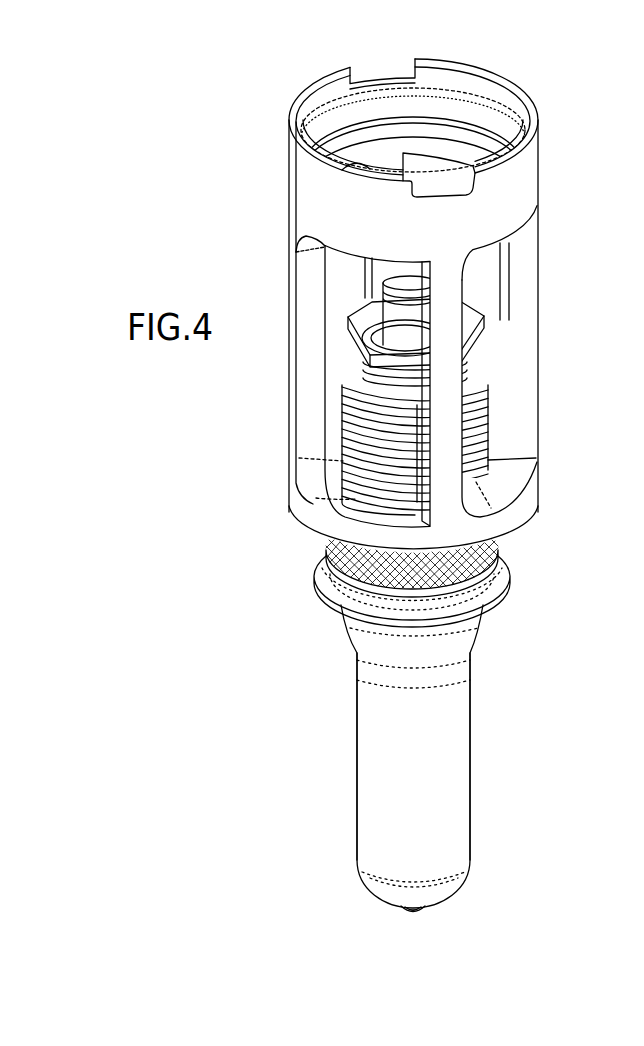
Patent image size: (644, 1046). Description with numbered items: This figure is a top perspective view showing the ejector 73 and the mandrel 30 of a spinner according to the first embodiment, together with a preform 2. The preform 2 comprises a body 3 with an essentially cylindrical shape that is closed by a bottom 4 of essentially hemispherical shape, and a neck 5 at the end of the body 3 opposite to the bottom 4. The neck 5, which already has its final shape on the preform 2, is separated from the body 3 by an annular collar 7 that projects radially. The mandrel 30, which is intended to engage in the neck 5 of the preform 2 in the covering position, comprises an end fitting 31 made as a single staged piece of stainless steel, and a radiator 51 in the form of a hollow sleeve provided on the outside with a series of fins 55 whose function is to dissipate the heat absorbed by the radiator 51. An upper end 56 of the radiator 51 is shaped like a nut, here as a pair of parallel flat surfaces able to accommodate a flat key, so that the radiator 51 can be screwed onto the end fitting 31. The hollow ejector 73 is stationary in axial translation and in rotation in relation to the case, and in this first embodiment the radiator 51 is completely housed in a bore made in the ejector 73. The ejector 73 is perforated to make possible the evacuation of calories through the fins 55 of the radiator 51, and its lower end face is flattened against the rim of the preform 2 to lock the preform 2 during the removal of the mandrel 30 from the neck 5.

The preform 2 is at (470, 735).
The body 3 is at (466, 790).
The bottom 4 is at (442, 892).
The neck 5 is at (493, 559).
The annular collar 7 is at (496, 594).
The mandrel 30 is at (488, 412).
The end fitting 31 is at (383, 302).
The radiator 51 is at (343, 433).
The fins 55 is at (483, 429).
The upper end 56 is at (360, 350).
The ejector 73 is at (533, 492).